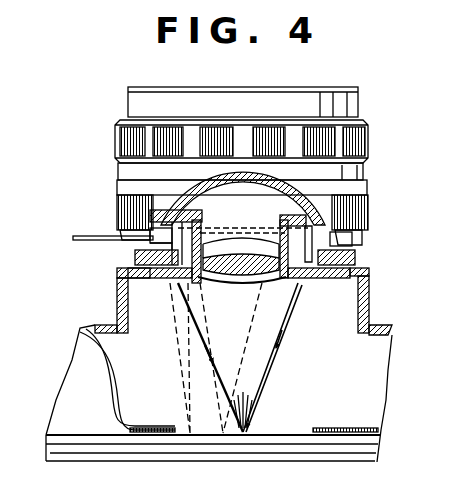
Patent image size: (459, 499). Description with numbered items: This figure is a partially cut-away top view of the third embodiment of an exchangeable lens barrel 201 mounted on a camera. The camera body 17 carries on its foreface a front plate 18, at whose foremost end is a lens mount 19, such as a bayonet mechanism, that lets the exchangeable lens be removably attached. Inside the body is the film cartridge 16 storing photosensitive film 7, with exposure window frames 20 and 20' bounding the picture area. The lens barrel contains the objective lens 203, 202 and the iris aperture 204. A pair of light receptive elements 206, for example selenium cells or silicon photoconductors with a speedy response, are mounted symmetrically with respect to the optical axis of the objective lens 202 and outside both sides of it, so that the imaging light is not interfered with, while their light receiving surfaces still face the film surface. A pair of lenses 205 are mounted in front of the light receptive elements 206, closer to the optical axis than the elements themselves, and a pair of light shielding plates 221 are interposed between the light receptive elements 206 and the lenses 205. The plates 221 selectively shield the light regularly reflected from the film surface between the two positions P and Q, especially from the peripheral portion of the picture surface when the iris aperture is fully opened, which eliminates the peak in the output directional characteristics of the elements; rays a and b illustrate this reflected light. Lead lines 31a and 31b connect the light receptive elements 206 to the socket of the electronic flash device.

The lens barrel 201 is at (370, 148).
The objective lens 203 is at (370, 207).
The iris aperture 204 is at (270, 198).
The light receptive elements 206 is at (145, 236).
The lead line 31a is at (73, 238).
The lead line 31b is at (80, 243).
The lenses 205 is at (178, 280).
The objective lens 202 is at (200, 288).
The light shielding plates 221 is at (208, 250).
The lens mount 19 is at (356, 258).
The front plate 18 is at (370, 300).
The camera body 17 is at (90, 327).
The film cartridge 16 is at (78, 378).
The exposure window frame 20' is at (152, 412).
The exposure window frame 20 is at (345, 414).
The film 7 is at (283, 437).
The light ray a is at (250, 352).
The light ray b is at (200, 303).
The position P is at (223, 437).
The position Q is at (190, 437).